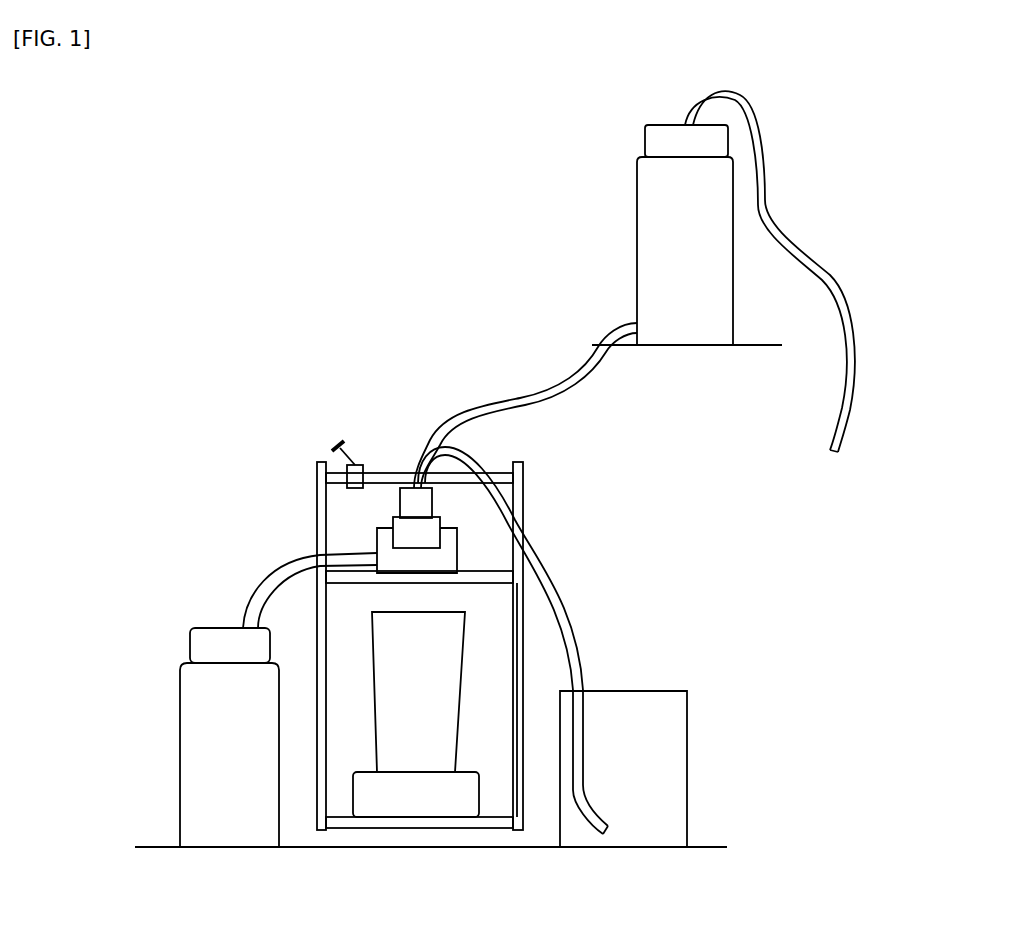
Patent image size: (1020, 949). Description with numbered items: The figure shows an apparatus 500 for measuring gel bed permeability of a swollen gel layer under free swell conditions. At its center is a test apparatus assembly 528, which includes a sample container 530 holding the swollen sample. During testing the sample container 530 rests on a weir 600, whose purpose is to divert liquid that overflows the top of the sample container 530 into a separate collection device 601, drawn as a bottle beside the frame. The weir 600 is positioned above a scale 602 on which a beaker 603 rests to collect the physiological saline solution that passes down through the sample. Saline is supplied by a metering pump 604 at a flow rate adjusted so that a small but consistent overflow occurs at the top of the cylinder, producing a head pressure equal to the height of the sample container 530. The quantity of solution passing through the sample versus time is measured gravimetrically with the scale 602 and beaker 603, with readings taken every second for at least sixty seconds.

The apparatus for measuring GBP 500 is at (371, 248).
The test apparatus assembly 528 is at (390, 497).
The sample container 530 is at (382, 522).
The weir 600 is at (465, 560).
The separate collection device 601 is at (207, 718).
The scale 602 is at (460, 795).
The beaker 603 is at (438, 670).
The metering pump 604 is at (654, 737).